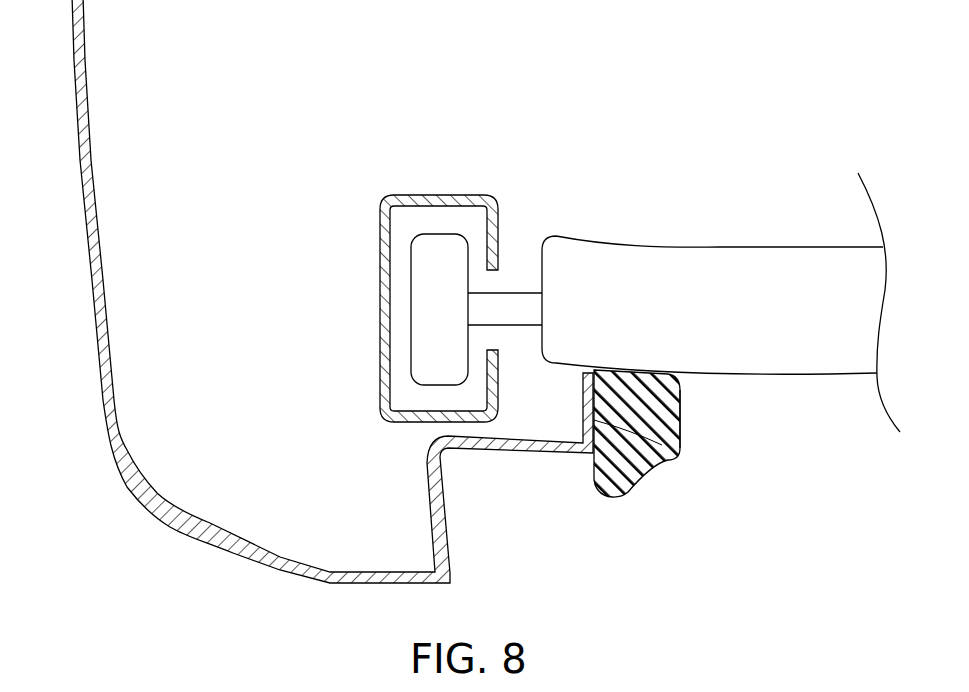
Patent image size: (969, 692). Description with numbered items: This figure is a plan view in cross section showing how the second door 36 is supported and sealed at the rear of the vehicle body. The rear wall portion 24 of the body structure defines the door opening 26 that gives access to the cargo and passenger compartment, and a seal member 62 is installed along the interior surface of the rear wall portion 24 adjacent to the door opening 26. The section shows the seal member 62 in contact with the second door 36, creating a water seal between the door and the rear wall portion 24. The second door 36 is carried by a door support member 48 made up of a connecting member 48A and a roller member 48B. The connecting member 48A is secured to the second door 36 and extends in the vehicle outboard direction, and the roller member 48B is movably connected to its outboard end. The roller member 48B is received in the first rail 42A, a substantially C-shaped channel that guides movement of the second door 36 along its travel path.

The rear wall portion 24 is at (120, 470).
The first rail 42A is at (437, 193).
The door support member 48 is at (435, 311).
The connecting member 48A is at (522, 327).
The roller member 48B is at (411, 277).
The second door 36 is at (743, 290).
The door opening 26 is at (660, 466).
The seal member 62 is at (688, 425).